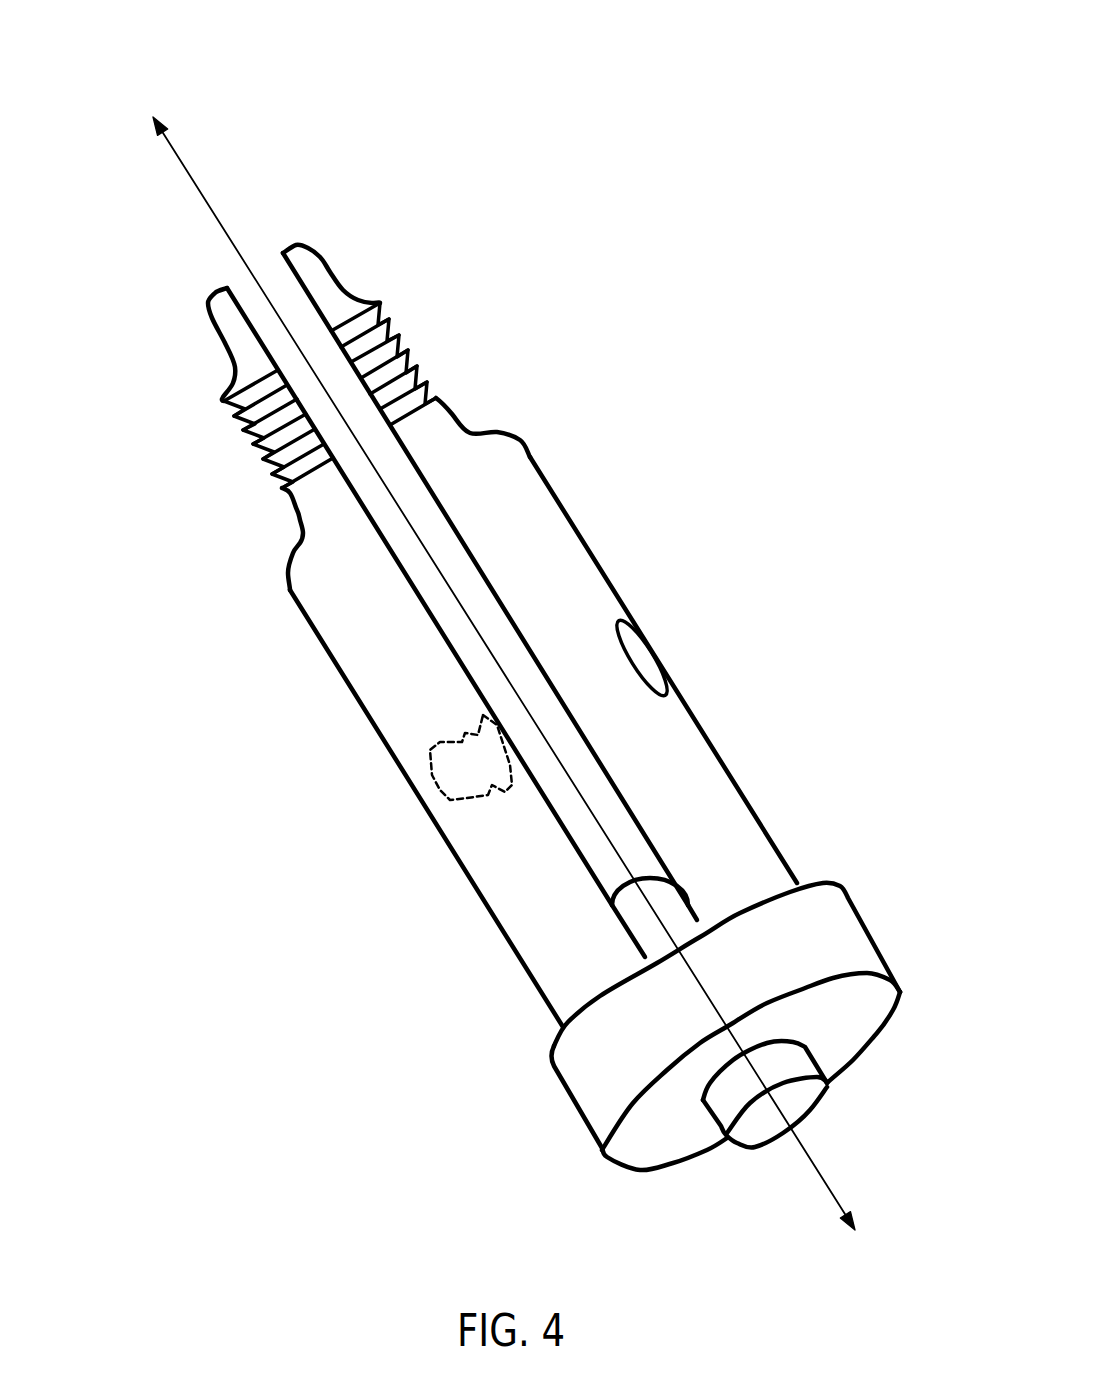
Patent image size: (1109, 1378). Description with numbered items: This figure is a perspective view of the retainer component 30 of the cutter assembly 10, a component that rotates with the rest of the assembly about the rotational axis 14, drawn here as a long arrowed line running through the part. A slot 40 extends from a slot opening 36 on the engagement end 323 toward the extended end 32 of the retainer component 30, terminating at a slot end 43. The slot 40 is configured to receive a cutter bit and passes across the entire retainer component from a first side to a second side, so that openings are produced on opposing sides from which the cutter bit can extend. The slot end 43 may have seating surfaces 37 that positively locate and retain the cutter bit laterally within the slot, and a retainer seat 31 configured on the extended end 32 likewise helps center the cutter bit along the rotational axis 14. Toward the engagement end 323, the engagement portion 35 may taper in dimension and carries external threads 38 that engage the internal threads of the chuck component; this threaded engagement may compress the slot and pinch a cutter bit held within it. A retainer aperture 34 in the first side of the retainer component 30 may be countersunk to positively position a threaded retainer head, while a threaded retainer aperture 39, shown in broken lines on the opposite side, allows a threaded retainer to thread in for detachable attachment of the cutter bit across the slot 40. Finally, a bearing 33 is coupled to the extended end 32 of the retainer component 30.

The cutter assembly 10 is at (140, 76).
The rotational axis 14 is at (818, 1168).
The retainer component 30 is at (575, 570).
The retainer seat 31 is at (593, 613).
The extended end 32 is at (560, 1027).
The bearing 33 is at (840, 930).
The retainer aperture 34 is at (647, 657).
The engagement portion 35 is at (375, 322).
The slot opening 36 is at (225, 291).
The seating surfaces 37 is at (637, 917).
The external threads 38 is at (415, 345).
The threaded retainer aperture 39 is at (454, 779).
The slot 40 is at (450, 543).
The slot end 43 is at (672, 878).
The engagement end 323 is at (306, 257).